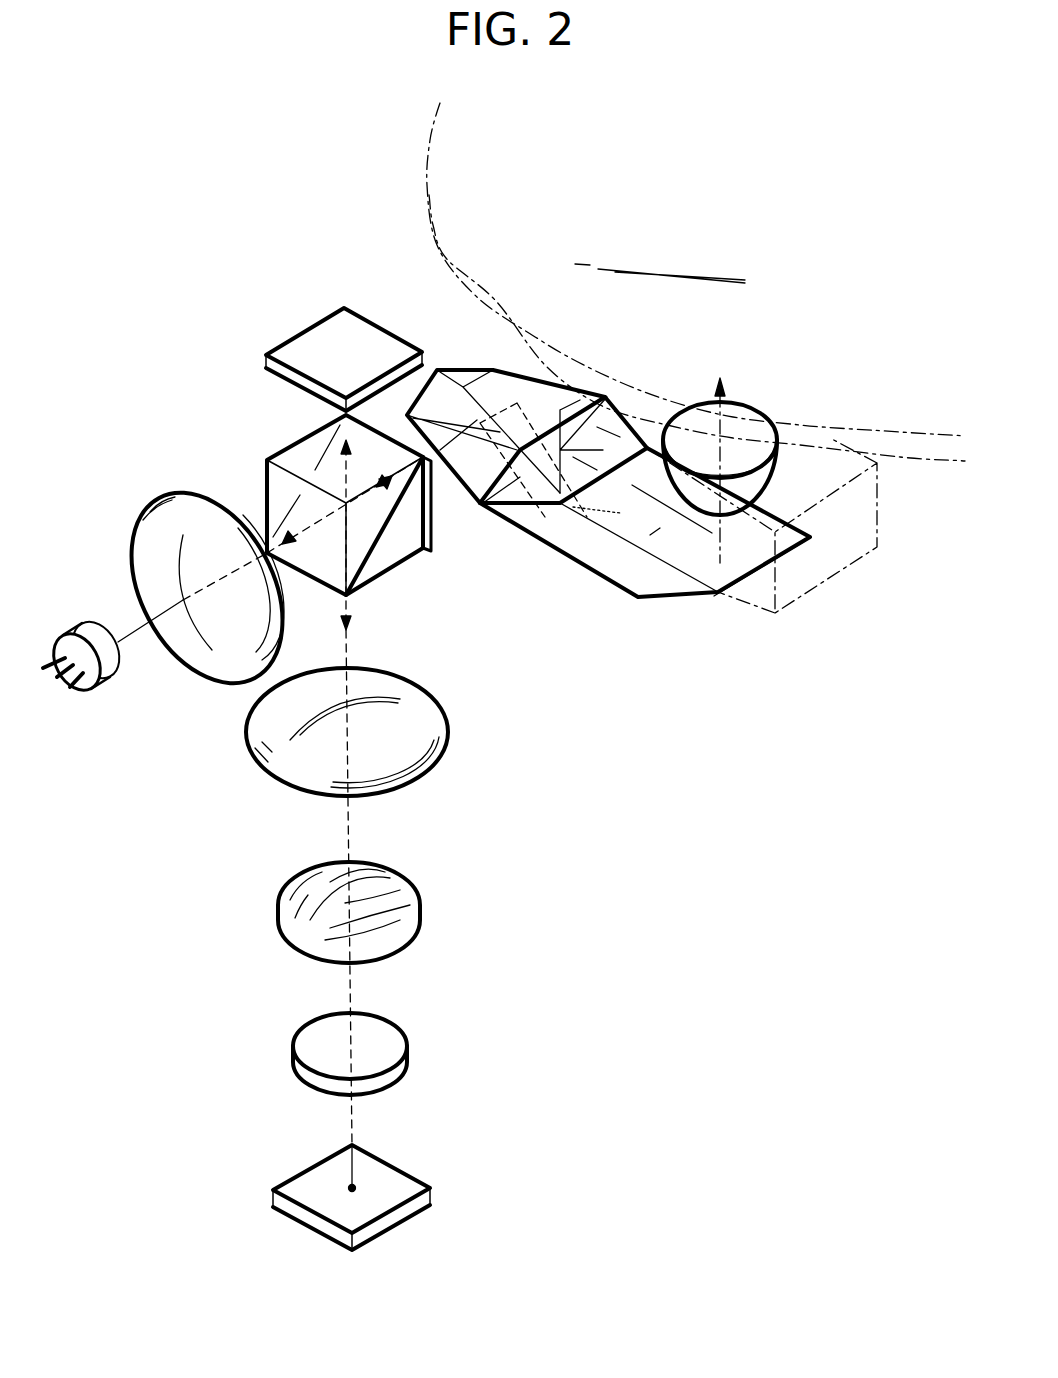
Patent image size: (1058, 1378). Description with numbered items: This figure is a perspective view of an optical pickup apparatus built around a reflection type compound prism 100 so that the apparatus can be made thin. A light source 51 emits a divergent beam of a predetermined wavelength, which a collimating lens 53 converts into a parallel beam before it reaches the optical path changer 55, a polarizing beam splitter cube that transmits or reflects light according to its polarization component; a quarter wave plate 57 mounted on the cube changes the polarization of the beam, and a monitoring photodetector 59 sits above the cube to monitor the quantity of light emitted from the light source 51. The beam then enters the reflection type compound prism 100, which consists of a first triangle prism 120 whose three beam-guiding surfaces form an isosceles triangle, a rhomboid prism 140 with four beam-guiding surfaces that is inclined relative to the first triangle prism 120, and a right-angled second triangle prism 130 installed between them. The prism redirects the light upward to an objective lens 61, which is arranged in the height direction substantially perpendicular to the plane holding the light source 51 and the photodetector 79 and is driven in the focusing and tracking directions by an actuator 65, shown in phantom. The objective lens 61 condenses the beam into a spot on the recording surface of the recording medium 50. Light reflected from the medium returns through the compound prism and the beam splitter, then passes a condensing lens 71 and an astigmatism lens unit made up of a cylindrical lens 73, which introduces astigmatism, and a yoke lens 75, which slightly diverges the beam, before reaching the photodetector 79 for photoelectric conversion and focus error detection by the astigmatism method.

The recording medium 50 is at (427, 179).
The light source 51 is at (111, 678).
The collimating lens 53 is at (166, 495).
The optical path changer 55 is at (392, 572).
The wave plate 57 is at (432, 552).
The monitoring photodetector 59 is at (302, 330).
The objective lens 61 is at (772, 474).
The actuator 65 is at (848, 572).
The condensing lens 71 is at (430, 702).
The cylindrical lens 73 is at (413, 895).
The yoke lens 75 is at (402, 1033).
The photodetector 79 is at (408, 1178).
The reflection type compound prism 100 is at (613, 586).
The first triangle prism 120 is at (490, 383).
The second triangle prism 130 is at (525, 493).
The rhomboid prism 140 is at (572, 560).